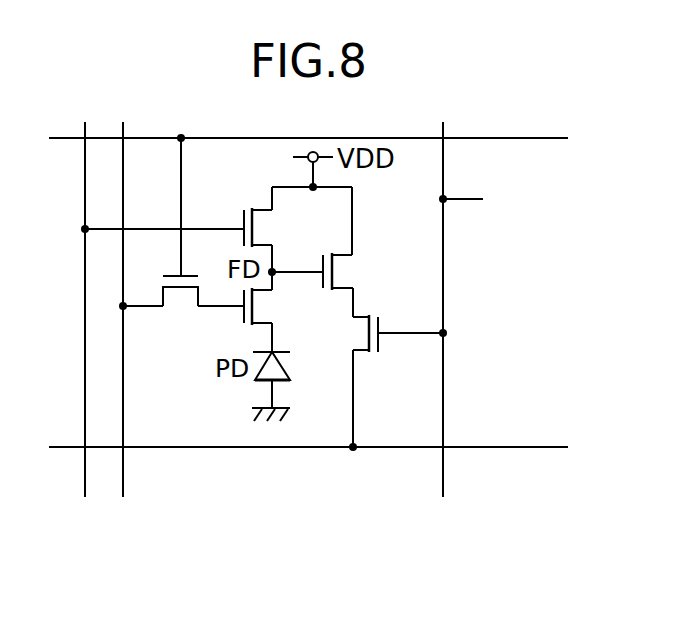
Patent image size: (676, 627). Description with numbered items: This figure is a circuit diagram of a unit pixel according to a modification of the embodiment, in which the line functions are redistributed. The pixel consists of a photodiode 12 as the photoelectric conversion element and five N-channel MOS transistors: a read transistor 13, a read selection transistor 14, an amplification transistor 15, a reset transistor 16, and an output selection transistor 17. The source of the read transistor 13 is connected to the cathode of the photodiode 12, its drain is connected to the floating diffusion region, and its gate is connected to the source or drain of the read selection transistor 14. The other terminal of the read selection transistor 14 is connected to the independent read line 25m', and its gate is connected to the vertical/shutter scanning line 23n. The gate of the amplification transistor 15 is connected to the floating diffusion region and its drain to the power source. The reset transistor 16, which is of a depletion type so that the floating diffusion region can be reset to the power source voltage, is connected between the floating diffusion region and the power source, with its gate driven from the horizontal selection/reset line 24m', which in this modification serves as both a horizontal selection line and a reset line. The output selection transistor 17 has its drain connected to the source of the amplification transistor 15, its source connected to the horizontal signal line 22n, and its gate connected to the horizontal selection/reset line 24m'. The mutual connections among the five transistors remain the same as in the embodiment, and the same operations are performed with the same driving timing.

The photodiode 12 is at (283, 362).
The read transistor 13 is at (258, 305).
The read selection transistor 14 is at (178, 290).
The amplification transistor 15 is at (335, 272).
The reset transistor 16 is at (258, 228).
The output selection transistor 17 is at (360, 348).
The horizontal signal line 22n is at (497, 444).
The vertical/shutter scanning line 23n is at (497, 138).
The horizontal selection/reset line 24m' is at (488, 309).
The independent read line 25m' is at (168, 309).